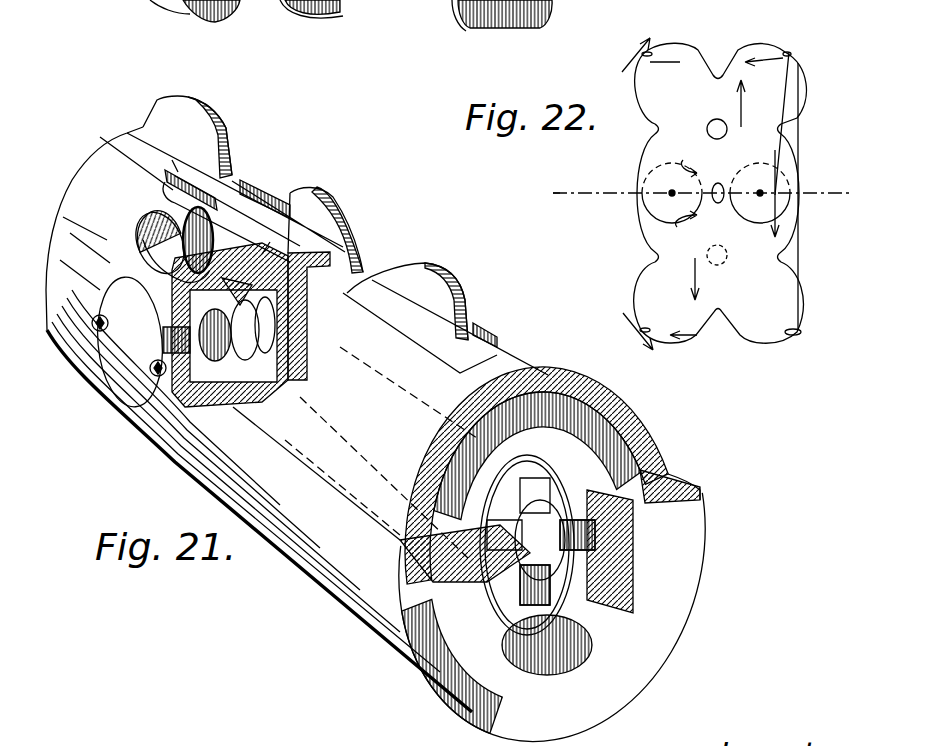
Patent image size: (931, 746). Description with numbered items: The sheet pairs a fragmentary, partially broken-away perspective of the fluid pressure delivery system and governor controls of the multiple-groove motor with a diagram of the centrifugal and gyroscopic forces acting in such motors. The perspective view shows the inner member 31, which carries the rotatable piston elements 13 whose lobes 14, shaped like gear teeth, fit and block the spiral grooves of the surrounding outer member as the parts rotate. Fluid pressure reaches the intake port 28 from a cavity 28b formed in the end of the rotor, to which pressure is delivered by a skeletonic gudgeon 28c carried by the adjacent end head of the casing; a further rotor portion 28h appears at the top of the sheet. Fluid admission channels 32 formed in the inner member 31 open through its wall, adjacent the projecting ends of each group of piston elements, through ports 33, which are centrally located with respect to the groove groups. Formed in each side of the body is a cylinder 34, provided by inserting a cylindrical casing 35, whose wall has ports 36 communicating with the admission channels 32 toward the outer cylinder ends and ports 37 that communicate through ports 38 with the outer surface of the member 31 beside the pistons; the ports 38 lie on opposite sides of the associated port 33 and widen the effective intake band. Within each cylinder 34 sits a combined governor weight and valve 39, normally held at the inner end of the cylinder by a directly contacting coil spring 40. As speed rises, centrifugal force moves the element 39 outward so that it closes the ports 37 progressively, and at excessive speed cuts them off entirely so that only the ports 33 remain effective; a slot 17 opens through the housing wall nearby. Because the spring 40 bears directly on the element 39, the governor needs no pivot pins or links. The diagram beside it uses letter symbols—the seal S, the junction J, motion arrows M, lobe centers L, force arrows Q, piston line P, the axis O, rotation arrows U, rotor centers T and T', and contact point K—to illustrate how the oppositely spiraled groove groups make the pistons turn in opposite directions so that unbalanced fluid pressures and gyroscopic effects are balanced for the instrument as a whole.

In FIG. 21, the piston element 13 is at (165, 99).
In FIG. 21, the lobe 14 is at (322, 197).
In FIG. 21, the slot 17 is at (493, 346).
In FIG. 21, the intake port 28 is at (425, 0).
In FIG. 21, the rotor portion 28h is at (362, 0).
In FIG. 21, the cavity 28b is at (678, 485).
In FIG. 21, the skeletonic gudgeon 28c is at (605, 635).
In FIG. 21, the inner member 31 is at (663, 628).
In FIG. 21, the fluid admission channel 32 is at (160, 235).
In FIG. 21, the port 33 is at (262, 195).
In FIG. 21, the cylinder 34 is at (143, 240).
In FIG. 21, the cylindrical casing 35 is at (123, 395).
In FIG. 21, the port 36 is at (212, 300).
In FIG. 21, the port 37 is at (277, 375).
In FIG. 21, the port 38 is at (178, 178).
In FIG. 21, the combined governor weight and valve 39 is at (265, 320).
In FIG. 21, the coil spring 40 is at (163, 342).
In FIG. 22, the seal S is at (718, 50).
In FIG. 22, the junction J is at (770, 50).
In FIG. 22, the motion arrow M is at (691, 197).
In FIG. 22, the lobe center L is at (708, 123).
In FIG. 22, the force arrow Q is at (742, 110).
In FIG. 22, the piston line P is at (798, 130).
In FIG. 22, the axis O is at (573, 190).
In FIG. 22, the rotation arrow U is at (683, 160).
In FIG. 22, the rotor center T is at (652, 193).
In FIG. 22, the rotor center T' is at (760, 193).
In FIG. 22, the contact point K is at (700, 333).